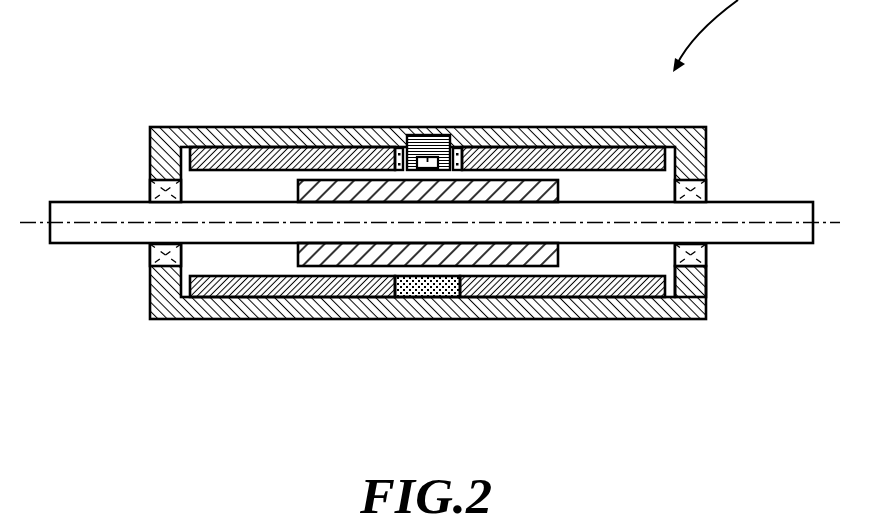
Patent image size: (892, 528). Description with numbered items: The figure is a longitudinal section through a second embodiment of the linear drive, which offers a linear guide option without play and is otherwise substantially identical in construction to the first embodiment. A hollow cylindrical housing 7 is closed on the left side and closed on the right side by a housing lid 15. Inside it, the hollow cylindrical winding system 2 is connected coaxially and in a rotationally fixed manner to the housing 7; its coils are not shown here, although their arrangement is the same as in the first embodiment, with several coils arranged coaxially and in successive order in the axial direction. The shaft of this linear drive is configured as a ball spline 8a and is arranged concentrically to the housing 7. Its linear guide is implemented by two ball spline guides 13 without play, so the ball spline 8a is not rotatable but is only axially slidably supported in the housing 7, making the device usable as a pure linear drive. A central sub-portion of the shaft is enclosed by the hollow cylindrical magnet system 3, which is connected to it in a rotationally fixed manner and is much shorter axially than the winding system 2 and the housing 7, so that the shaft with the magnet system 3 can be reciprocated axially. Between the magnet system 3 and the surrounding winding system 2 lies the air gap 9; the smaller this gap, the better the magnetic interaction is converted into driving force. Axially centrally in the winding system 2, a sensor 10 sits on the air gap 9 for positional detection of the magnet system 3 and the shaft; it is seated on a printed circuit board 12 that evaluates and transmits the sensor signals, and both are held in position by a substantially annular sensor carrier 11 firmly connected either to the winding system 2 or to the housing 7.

The winding system 2 is at (257, 160).
The magnet system 3 is at (540, 192).
The housing 7 is at (189, 138).
The ball spline 8a is at (102, 228).
The air gap 9 is at (523, 176).
The sensor 10 is at (428, 157).
The sensor carrier 11 is at (458, 152).
The printed circuit board 12 is at (411, 146).
The ball spline guides 13 is at (150, 187).
The housing lid 15 is at (688, 282).